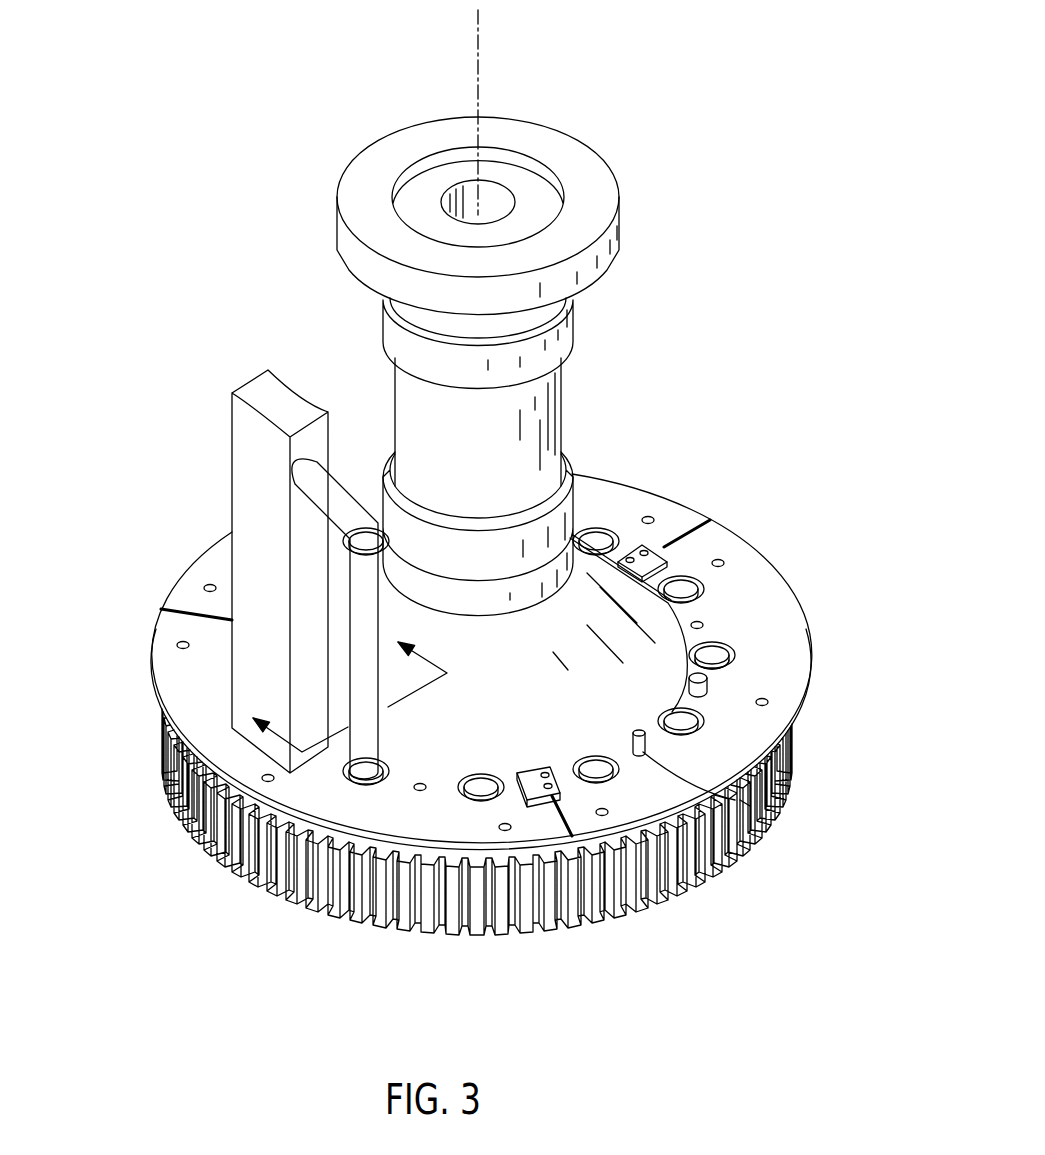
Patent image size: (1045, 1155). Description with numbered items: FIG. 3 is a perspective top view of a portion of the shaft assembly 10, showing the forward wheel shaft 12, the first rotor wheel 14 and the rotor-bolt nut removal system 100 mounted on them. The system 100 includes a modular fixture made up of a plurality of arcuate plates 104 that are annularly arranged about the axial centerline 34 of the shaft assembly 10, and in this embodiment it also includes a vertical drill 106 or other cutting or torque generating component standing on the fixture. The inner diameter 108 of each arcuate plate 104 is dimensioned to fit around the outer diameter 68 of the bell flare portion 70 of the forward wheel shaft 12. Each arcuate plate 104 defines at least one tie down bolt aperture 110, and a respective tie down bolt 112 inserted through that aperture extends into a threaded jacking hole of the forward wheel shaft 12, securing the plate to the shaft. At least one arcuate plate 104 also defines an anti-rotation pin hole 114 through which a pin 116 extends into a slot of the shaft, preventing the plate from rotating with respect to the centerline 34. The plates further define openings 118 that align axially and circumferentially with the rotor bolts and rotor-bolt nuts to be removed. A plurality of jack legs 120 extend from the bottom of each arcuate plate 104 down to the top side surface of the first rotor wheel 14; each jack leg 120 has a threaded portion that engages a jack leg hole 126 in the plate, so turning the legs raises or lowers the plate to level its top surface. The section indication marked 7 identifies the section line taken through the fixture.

The shaft assembly 10 is at (700, 112).
The forward wheel shaft 12 is at (589, 385).
The first rotor wheel 14 is at (465, 864).
The axial centerline 34 is at (480, 42).
The outer diameter 68 is at (676, 637).
The bell flare portion 70 is at (623, 604).
The rotor-bolt nut removal system 100 is at (466, 702).
The arcuate plates 104 is at (608, 478).
The vertical drill 106 is at (227, 475).
The inner diameter 108 is at (680, 630).
The tie down bolt aperture 110 is at (700, 697).
The tie down bolt 112 is at (714, 675).
The anti-rotation pin hole 114 is at (745, 803).
The pin 116 is at (633, 735).
The openings 118 is at (455, 788).
The jack legs 120 is at (240, 838).
The jack leg hole 126 is at (608, 814).
The section line 7- 7 is at (350, 681).